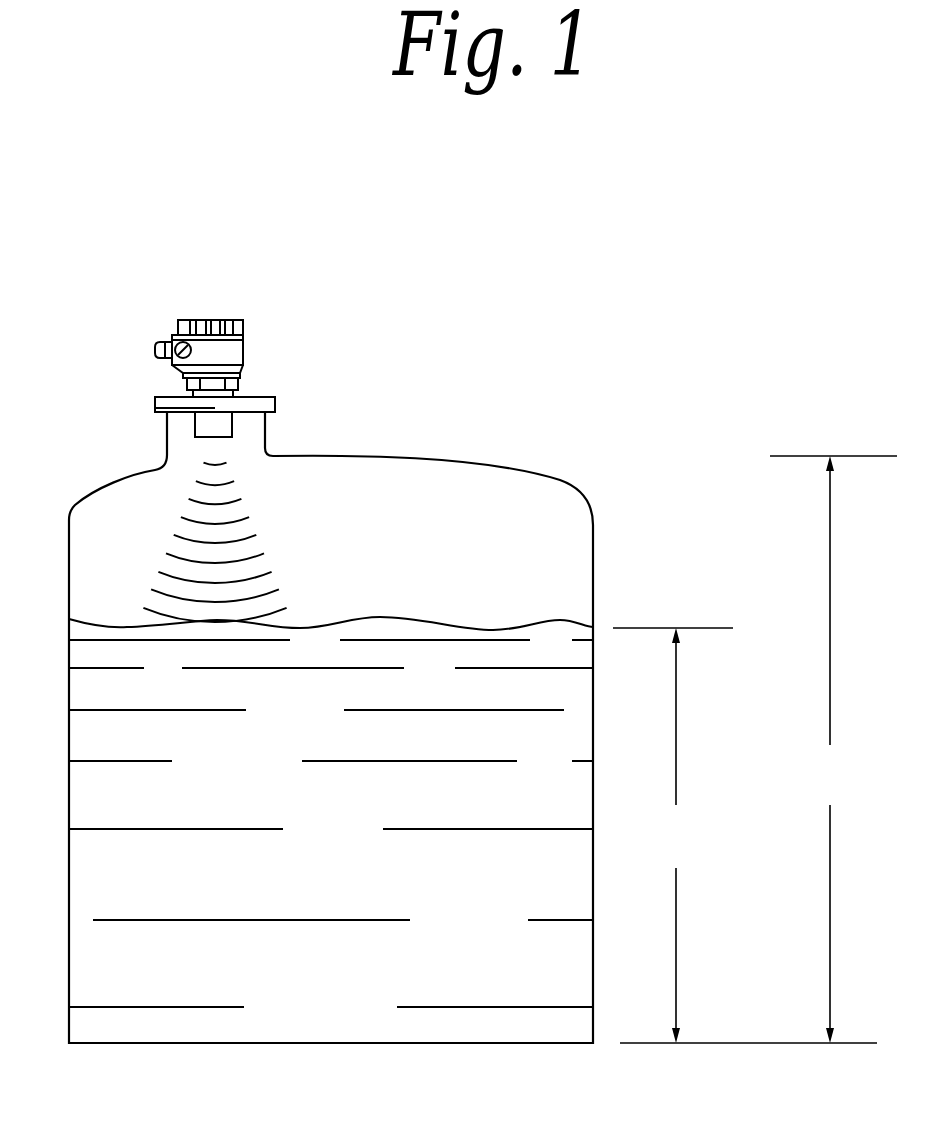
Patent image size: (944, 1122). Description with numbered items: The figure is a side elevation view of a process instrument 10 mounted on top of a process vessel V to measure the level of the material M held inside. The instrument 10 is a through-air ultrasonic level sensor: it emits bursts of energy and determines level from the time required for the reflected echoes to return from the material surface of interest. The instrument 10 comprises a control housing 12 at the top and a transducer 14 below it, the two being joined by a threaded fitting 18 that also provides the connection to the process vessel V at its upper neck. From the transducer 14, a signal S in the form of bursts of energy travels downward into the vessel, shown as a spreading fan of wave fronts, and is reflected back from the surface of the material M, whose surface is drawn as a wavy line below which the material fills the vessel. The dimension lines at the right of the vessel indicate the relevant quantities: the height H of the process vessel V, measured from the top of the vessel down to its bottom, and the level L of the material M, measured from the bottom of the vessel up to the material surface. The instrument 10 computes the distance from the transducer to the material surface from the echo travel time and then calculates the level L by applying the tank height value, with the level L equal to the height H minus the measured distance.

The process instrument 10 is at (382, 280).
The control housing 12 is at (258, 352).
The threaded fitting 18 is at (238, 385).
The transducer 14 is at (248, 424).
The process vessel V is at (595, 572).
The material M is at (390, 616).
The signal S is at (289, 536).
The height H is at (758, 749).
The level L is at (673, 835).